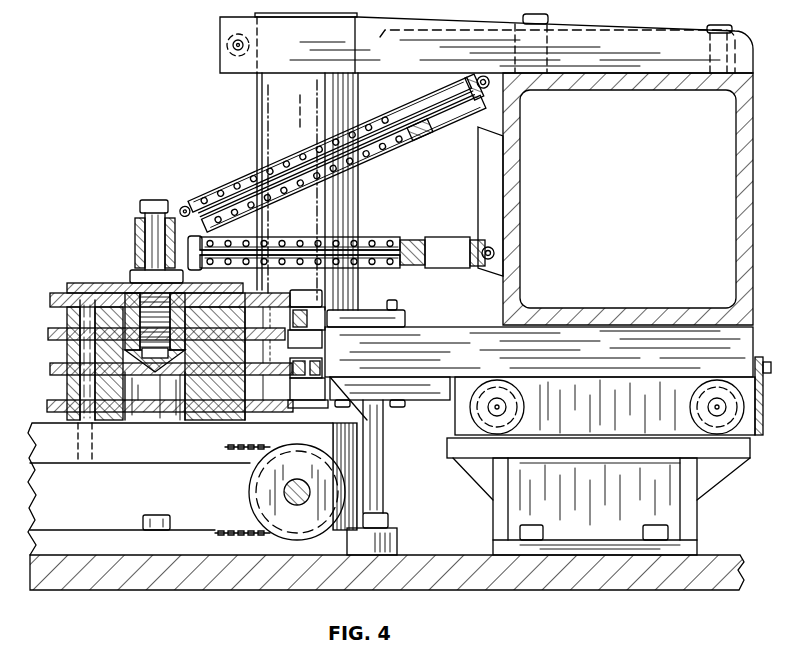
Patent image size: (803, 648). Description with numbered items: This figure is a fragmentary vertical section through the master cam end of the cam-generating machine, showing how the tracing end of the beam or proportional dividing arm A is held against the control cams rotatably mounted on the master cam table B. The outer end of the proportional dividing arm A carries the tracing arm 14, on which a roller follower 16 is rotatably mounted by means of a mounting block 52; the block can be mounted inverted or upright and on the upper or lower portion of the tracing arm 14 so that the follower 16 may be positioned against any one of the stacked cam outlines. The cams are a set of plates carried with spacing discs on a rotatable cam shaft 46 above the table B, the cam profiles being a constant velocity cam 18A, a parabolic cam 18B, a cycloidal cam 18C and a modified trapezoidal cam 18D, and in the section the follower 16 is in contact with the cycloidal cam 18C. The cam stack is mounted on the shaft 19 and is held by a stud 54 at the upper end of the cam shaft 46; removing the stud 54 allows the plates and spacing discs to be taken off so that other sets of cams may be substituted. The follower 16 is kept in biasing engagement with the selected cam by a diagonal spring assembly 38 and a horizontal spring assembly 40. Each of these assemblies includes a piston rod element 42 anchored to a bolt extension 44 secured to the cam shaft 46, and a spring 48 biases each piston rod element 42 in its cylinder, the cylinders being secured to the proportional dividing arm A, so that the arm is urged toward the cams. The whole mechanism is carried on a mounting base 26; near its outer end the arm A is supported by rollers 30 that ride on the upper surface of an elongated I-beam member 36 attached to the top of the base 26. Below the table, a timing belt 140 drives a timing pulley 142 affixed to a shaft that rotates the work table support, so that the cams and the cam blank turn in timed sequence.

The tracing arm 14 is at (590, 358).
The roller follower 16 is at (380, 428).
The constant velocity cam 18A is at (53, 297).
The parabolic cam 18B is at (50, 331).
The cycloidal cam 18C is at (52, 366).
The modified trapezoidal cam 18D is at (50, 403).
The shaft 19 is at (155, 415).
The mounting base 26 is at (720, 560).
The rollers 30 is at (750, 440).
The I-beam member 36 is at (690, 497).
The diagonal spring assembly 38 is at (338, 154).
The horizontal spring assembly 40 is at (425, 240).
The piston rod element 42 is at (185, 205).
The bolt extension 44 is at (140, 209).
The cam shaft 46 is at (113, 283).
The spring 48 is at (344, 163).
The mounting block 52 is at (395, 392).
The stud 54 is at (137, 267).
The timing belt 140 is at (243, 450).
The timing pulley 142 is at (262, 488).
The proportional dividing arm A is at (628, 199).
The master cam table B is at (118, 262).